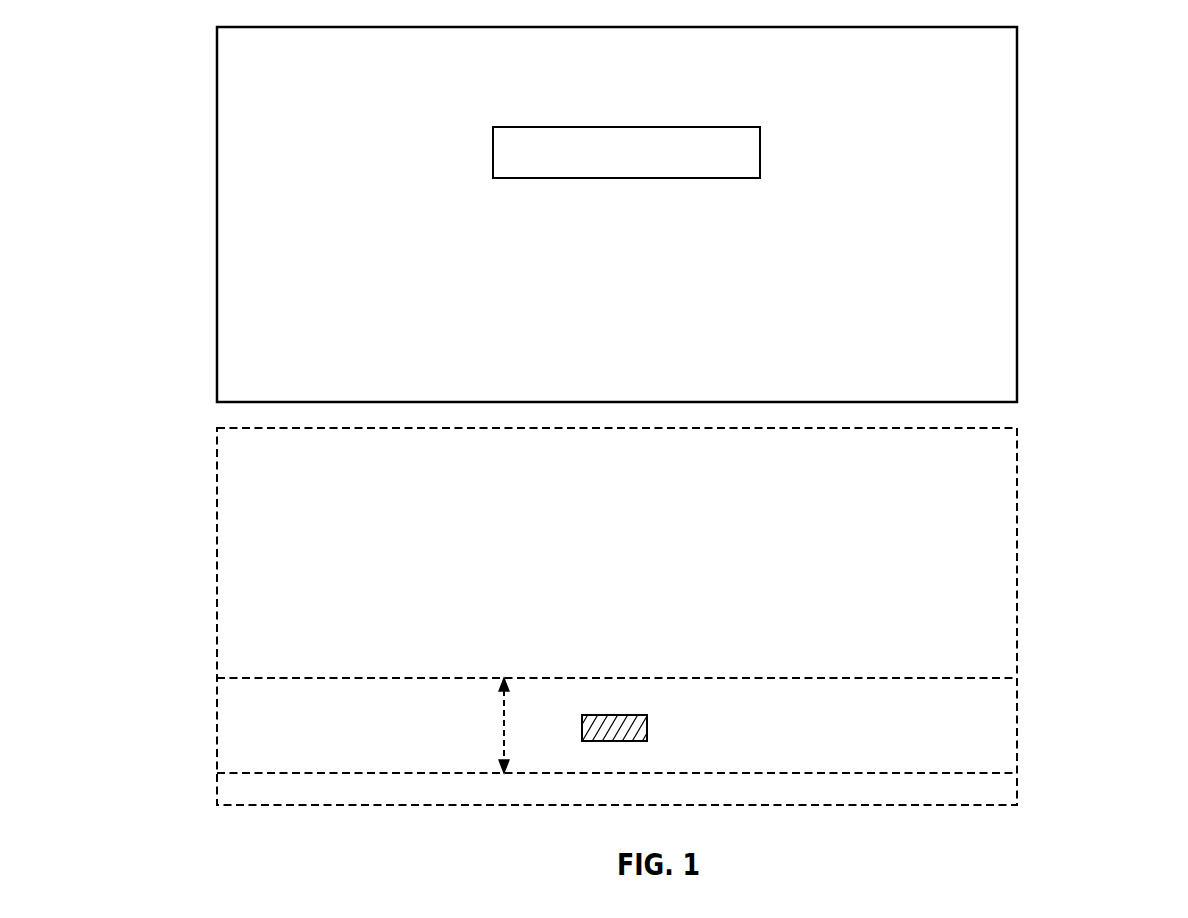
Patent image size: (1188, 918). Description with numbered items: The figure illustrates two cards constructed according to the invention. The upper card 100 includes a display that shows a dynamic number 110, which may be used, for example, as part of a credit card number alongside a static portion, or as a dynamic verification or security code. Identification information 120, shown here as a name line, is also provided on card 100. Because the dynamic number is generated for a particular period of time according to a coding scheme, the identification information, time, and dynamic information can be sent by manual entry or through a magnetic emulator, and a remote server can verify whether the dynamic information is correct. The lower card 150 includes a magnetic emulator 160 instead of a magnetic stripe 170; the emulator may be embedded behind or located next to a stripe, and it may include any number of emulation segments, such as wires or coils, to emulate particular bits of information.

The card 100 is at (1142, 479).
The dynamic number 110 is at (500, 143).
The identification information 120 is at (387, 358).
The card 150 is at (217, 612).
The magnetic emulator 160 is at (596, 716).
The magnetic stripe 170 is at (503, 716).